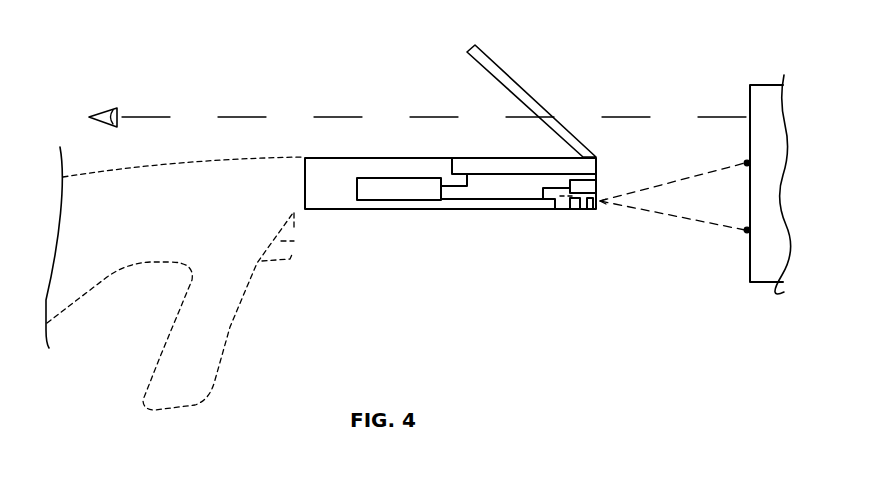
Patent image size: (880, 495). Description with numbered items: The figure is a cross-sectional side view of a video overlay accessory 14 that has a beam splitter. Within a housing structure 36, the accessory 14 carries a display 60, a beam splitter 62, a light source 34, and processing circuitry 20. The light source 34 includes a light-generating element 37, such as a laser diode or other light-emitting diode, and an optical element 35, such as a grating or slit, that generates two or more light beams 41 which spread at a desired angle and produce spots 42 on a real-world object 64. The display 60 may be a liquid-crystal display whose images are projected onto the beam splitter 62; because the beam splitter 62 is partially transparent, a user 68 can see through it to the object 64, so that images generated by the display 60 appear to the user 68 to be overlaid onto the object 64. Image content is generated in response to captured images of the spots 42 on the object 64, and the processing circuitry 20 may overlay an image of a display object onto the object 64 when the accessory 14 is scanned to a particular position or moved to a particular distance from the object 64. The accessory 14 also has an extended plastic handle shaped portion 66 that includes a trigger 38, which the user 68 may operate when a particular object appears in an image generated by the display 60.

The accessory 14 is at (243, 56).
The processing circuitry 20 is at (406, 192).
The light source 34 is at (562, 212).
The optical element 35 is at (593, 210).
The housing structure 36 is at (368, 164).
The light-generating element 37 is at (580, 212).
The trigger 38 is at (292, 242).
The light beams 41 is at (683, 182).
The spots 42 is at (745, 163).
The display 60 is at (493, 163).
The beam splitter 62 is at (505, 73).
The object 64 is at (755, 102).
The handle shaped portion 66 is at (218, 338).
The user 68 is at (105, 112).